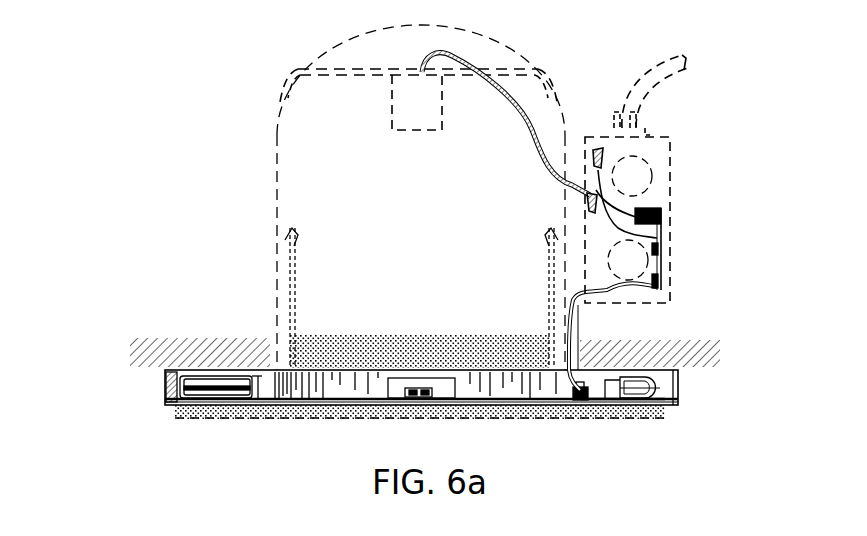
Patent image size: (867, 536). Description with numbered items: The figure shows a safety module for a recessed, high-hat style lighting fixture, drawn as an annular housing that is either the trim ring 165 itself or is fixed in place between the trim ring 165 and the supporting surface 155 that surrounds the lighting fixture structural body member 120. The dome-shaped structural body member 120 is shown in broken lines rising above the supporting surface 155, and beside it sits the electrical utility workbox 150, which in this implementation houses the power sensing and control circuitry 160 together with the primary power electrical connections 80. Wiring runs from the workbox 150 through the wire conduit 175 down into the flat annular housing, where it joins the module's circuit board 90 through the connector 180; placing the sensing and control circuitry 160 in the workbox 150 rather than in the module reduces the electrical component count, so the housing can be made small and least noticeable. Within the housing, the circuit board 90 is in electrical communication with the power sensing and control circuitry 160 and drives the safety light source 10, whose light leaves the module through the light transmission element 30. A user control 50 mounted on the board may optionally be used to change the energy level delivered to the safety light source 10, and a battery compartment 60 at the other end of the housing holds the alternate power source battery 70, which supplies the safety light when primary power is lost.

The safety light source 10 is at (660, 388).
The light transmission element 30 is at (680, 400).
The user control 50 is at (400, 395).
The battery compartment 60 is at (167, 388).
The alternate power source battery 70 is at (185, 380).
The primary power electrical connections 80 is at (606, 192).
The circuit board 90 is at (605, 402).
The lighting fixture structural body member 120 is at (277, 160).
The electrical utility workbox 150 is at (655, 140).
The supporting surface 155 is at (147, 372).
The power sensing and control circuitry 160 is at (661, 215).
The trim ring 165 is at (290, 338).
The wire conduit 175 is at (580, 330).
The connector 180 is at (590, 402).